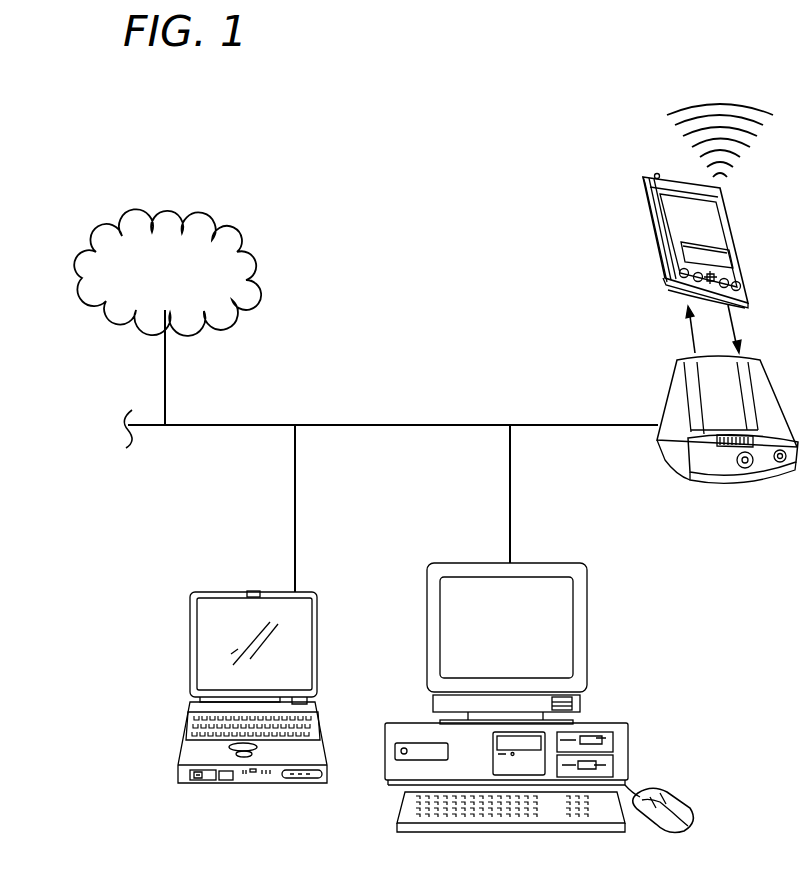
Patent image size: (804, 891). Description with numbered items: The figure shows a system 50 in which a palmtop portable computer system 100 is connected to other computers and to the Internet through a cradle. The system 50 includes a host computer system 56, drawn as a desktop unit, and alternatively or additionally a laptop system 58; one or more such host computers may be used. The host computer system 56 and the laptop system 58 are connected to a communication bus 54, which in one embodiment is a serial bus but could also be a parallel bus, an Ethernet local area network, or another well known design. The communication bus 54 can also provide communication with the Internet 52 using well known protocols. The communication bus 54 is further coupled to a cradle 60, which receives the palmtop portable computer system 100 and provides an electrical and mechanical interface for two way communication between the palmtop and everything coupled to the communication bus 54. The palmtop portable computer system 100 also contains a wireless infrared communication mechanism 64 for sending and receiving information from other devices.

The system 50 is at (271, 109).
The Internet 52 is at (81, 273).
The communication bus 54 is at (345, 423).
The host computer system 56 is at (587, 622).
The laptop system 58 is at (190, 632).
The cradle 60 is at (745, 482).
The wireless infrared communication mechanism 64 is at (686, 135).
The palmtop portable computer system 100 is at (656, 230).